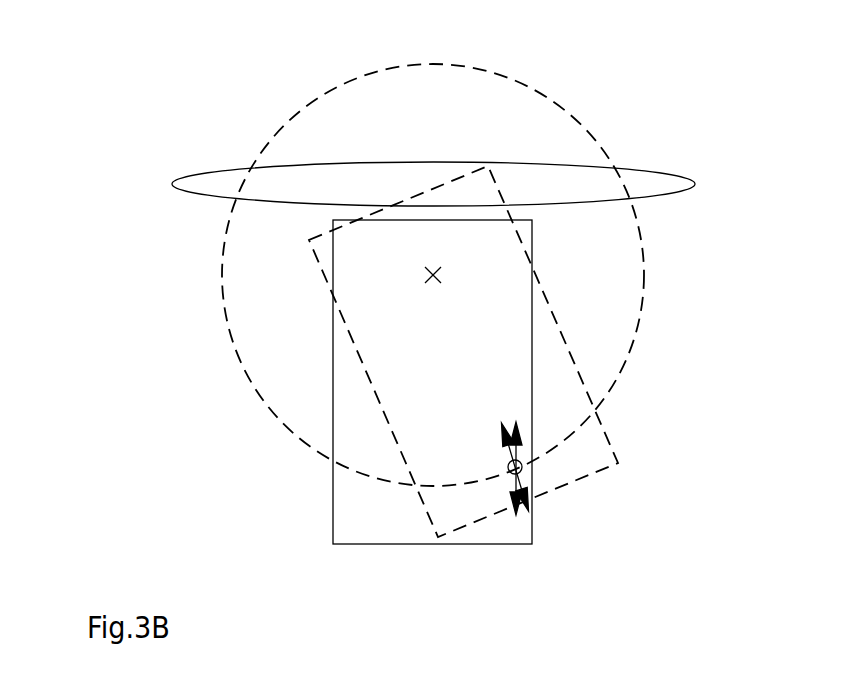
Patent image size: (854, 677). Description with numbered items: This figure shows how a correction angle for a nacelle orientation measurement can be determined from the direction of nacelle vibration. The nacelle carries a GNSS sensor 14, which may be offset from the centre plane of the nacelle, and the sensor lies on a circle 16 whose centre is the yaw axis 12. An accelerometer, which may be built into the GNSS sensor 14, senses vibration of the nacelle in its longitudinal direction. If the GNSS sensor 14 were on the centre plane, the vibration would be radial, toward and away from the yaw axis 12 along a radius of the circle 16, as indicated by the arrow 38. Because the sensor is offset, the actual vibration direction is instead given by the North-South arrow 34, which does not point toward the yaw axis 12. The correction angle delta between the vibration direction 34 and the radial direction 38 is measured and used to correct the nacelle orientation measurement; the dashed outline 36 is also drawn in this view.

The yaw axis 12 is at (425, 276).
The GNSS sensor 14 is at (521, 469).
The circle 16 is at (588, 123).
The North-South arrow 34 is at (509, 506).
The rotated outline 36 is at (612, 439).
The arrow 38 is at (527, 500).